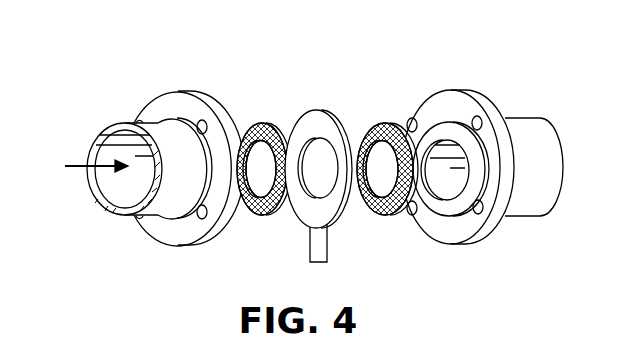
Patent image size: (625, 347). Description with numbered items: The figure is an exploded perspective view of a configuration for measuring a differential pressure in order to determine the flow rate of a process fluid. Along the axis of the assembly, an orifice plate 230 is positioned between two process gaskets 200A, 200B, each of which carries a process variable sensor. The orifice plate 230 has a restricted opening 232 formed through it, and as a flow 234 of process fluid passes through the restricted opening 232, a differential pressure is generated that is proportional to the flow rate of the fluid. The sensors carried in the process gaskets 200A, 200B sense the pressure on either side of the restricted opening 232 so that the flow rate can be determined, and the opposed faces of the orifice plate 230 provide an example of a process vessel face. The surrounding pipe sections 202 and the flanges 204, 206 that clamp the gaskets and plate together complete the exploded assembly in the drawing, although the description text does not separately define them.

The tube / conduit 202 is at (100, 142).
The first flange 204 is at (157, 105).
The second flange 206 is at (453, 102).
The first gasket 200A is at (250, 122).
The second gasket 200B is at (370, 137).
The orifice plate 230 is at (299, 170).
The orifice / hole 232 is at (317, 155).
The flow direction arrow 234 is at (75, 170).